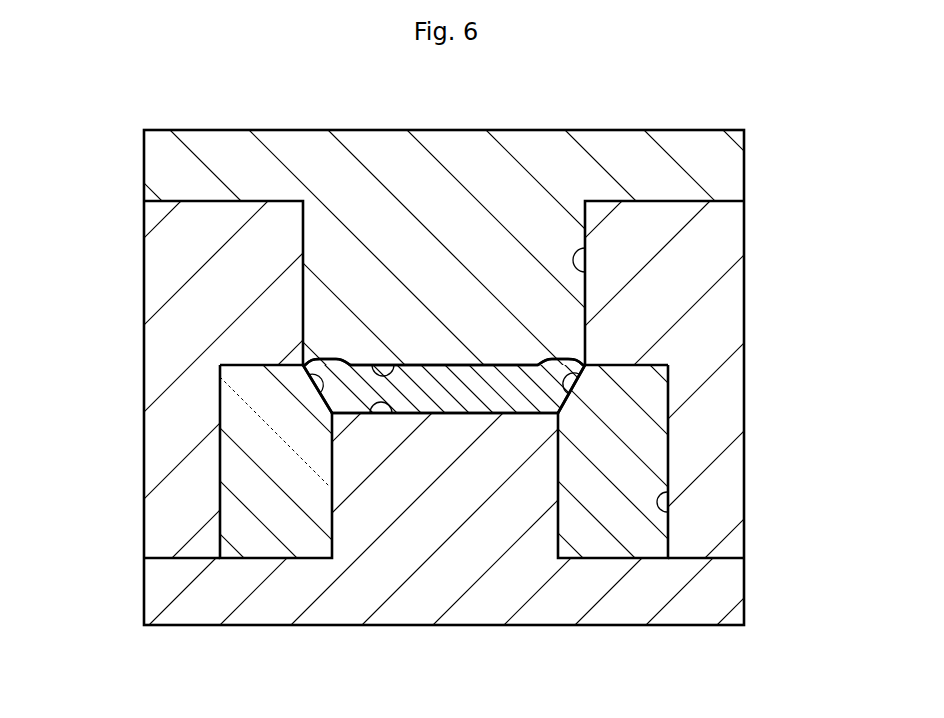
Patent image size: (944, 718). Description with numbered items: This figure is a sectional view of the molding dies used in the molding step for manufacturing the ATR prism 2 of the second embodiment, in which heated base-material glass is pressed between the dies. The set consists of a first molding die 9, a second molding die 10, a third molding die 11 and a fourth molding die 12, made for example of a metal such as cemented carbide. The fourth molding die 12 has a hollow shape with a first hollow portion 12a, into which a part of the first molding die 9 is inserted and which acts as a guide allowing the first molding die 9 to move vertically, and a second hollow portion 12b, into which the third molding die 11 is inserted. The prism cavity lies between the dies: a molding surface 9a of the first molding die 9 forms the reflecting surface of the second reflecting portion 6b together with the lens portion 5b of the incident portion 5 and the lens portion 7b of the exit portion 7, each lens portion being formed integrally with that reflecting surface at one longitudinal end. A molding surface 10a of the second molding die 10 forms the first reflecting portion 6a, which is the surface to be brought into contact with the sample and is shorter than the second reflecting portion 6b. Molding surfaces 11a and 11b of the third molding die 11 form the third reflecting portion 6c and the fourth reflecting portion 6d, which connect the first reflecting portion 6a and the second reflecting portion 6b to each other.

The ATR prism 2 is at (447, 403).
The incident portion 5 is at (338, 357).
The lens portion 5b is at (331, 358).
The first reflecting portion 6a is at (512, 414).
The second reflecting portion 6b is at (507, 365).
The third reflecting portion 6c is at (331, 412).
The fourth reflecting portion 6d is at (562, 410).
The exit portion 7 is at (560, 357).
The lens portion 7b is at (563, 362).
The first molding die 9 is at (623, 149).
The molding surface 9a is at (398, 363).
The second molding die 10 is at (413, 599).
The molding surface 10a is at (370, 414).
The third molding die 11 is at (634, 478).
The molding surface 11a is at (313, 377).
The molding surface 11b is at (578, 380).
The fourth molding die 12 is at (748, 283).
The first hollow portion 12a is at (585, 248).
The second hollow portion 12b is at (670, 514).